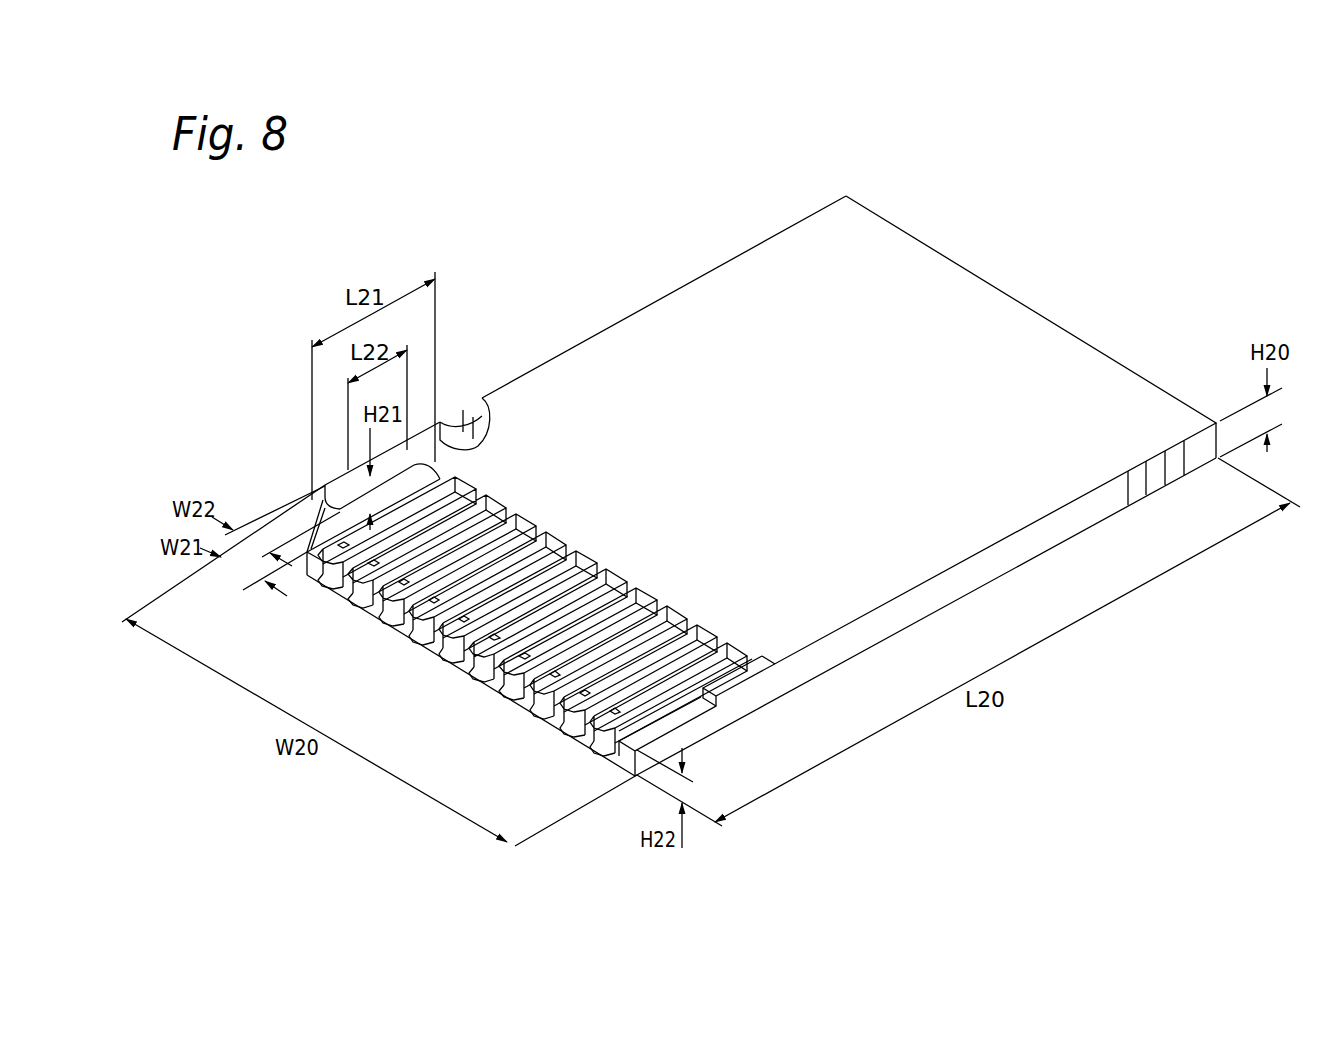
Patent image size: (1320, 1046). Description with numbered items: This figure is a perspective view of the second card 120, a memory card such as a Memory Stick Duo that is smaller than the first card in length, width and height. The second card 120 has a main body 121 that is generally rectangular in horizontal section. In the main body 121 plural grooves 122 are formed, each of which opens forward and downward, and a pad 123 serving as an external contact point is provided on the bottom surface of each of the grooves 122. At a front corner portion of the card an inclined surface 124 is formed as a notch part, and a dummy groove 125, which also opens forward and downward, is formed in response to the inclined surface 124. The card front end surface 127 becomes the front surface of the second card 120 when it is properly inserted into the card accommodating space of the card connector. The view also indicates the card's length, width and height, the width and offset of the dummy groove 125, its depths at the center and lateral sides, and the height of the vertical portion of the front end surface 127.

The second card 120 is at (1025, 252).
The main body 121 is at (843, 430).
The grooves 122 is at (660, 612).
The pad 123 is at (560, 583).
The inclined surface 124 is at (303, 534).
The dummy groove 125 is at (418, 491).
The card front end surface 127 is at (606, 756).